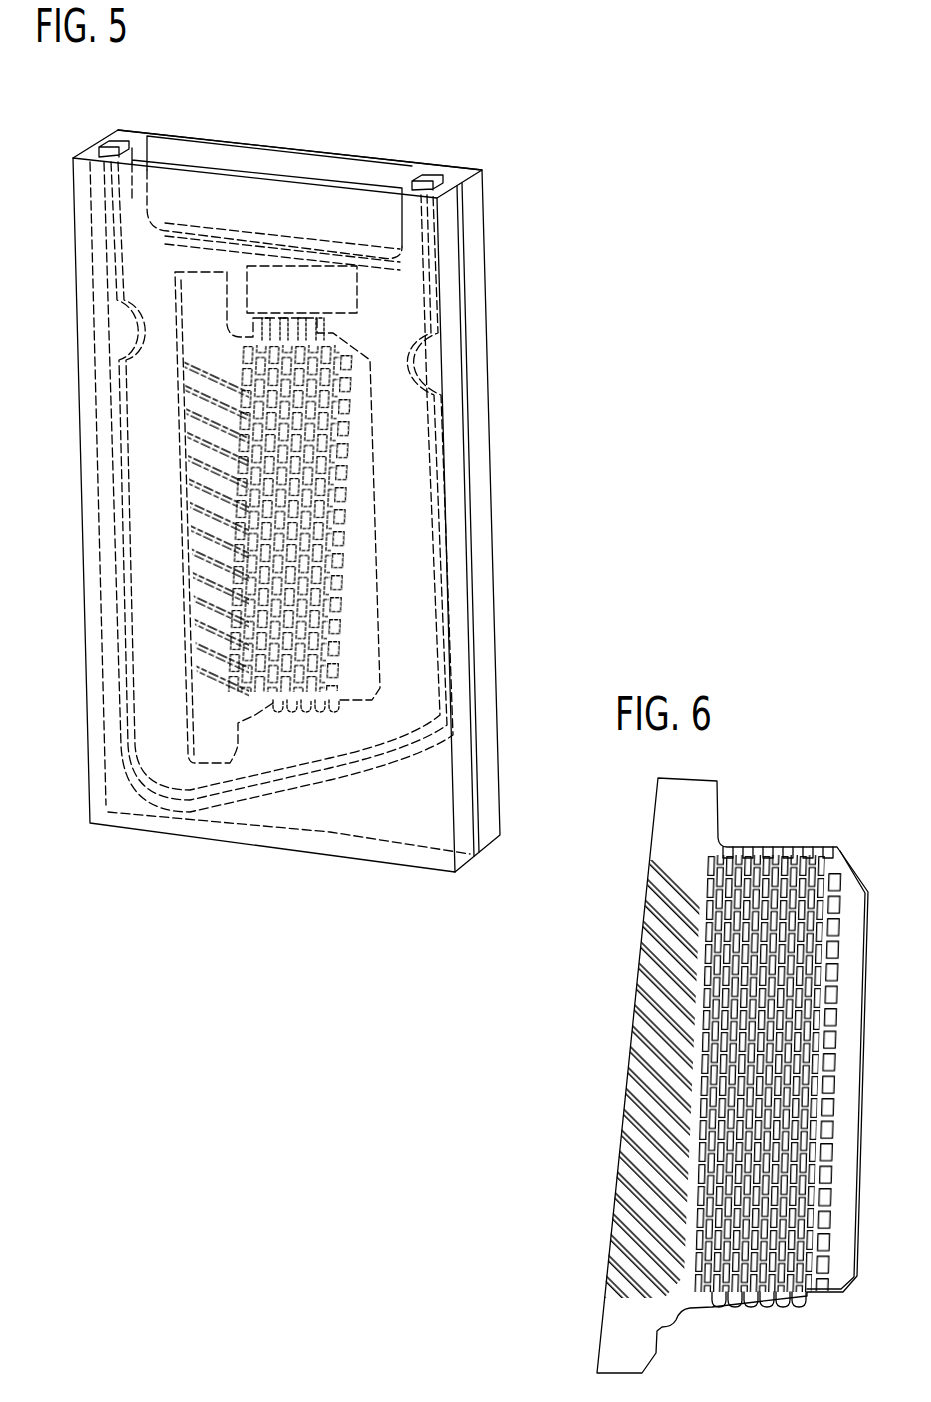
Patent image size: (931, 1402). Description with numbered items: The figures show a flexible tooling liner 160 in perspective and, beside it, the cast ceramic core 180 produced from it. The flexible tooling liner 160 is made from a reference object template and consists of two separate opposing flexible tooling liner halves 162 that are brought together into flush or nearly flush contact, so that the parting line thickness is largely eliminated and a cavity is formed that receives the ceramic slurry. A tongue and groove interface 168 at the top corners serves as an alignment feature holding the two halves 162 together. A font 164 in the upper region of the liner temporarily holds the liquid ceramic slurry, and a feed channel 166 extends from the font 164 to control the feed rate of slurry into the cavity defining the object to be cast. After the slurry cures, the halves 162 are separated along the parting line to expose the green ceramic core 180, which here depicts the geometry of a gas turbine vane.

In FIG. 5, the flexible tooling liner 160 is at (514, 165).
In FIG. 5, the flexible tooling liner halves 162 is at (117, 133).
In FIG. 5, the font 164 is at (313, 222).
In FIG. 5, the feed channel 166 is at (285, 287).
In FIG. 5, the tongue and groove interface 168 is at (127, 143).
In FIG. 6, the ceramic core 180 is at (697, 812).